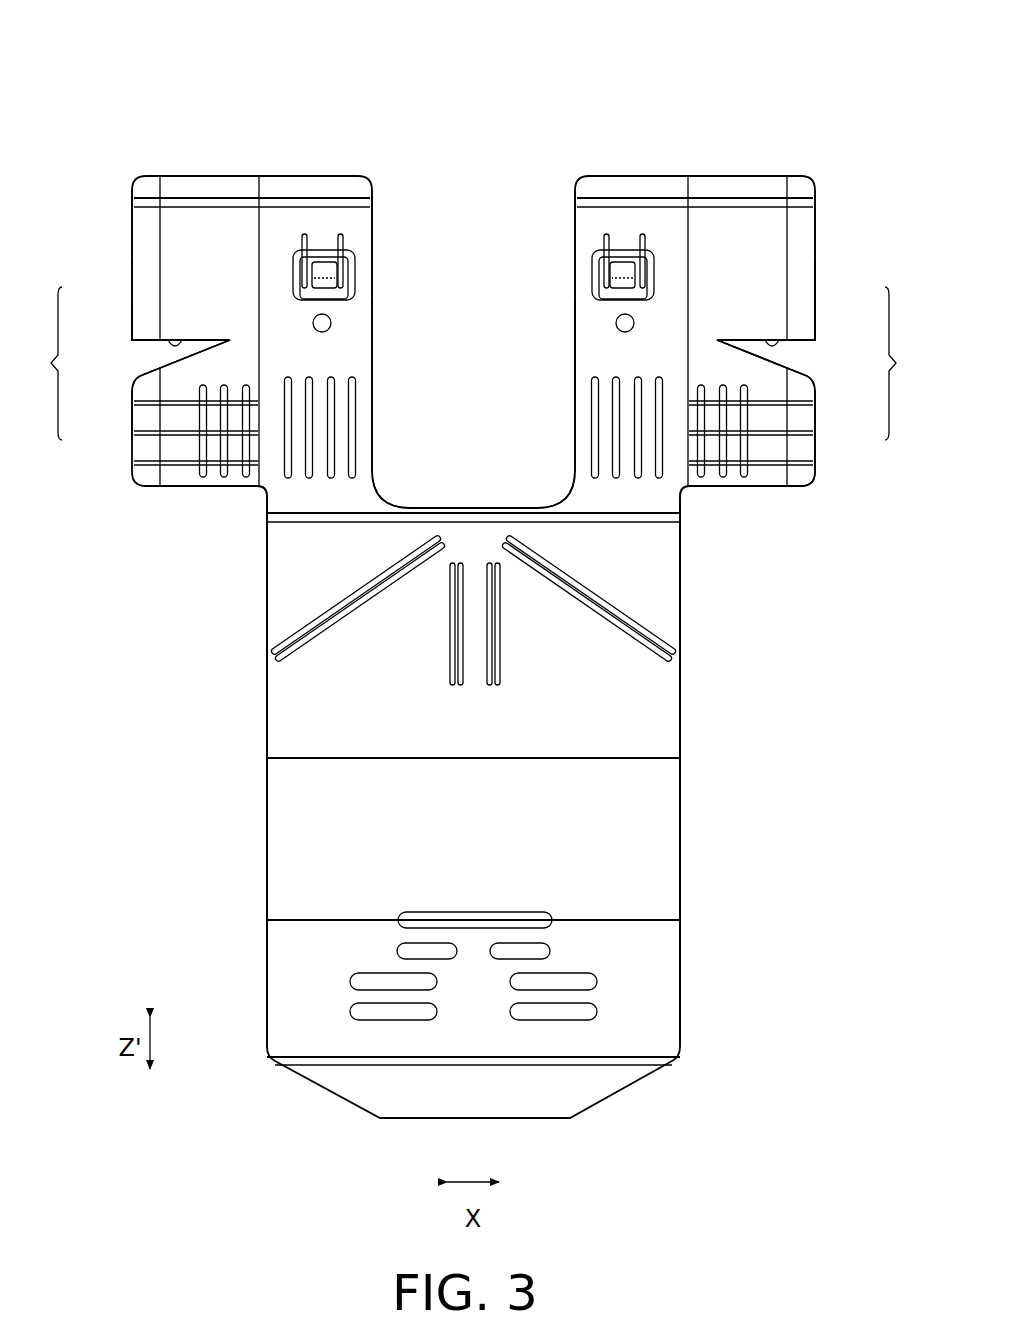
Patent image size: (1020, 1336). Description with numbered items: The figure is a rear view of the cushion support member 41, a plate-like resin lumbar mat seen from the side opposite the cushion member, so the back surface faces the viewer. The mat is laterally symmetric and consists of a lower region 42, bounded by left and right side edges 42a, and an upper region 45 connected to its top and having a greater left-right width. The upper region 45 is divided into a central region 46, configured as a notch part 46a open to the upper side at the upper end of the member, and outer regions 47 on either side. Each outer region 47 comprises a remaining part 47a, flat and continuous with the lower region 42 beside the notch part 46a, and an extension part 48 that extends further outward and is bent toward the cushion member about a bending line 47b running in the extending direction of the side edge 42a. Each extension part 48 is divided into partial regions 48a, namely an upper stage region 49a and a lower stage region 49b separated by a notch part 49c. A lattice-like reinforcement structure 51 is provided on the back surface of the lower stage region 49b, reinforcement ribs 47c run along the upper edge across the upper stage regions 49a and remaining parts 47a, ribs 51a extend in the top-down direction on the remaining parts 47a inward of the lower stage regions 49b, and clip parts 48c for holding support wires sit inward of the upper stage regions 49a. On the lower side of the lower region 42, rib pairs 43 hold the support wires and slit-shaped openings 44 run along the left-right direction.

The cushion support member 41 is at (747, 70).
The lower region 42 is at (685, 633).
The side edges 42a is at (267, 720).
The rib pairs 43 is at (332, 630).
The openings 44 is at (398, 920).
The upper region 45 is at (804, 494).
The central region 46 is at (575, 176).
The notch part 46a is at (376, 357).
The outer regions 47 is at (132, 176).
The remaining parts 47a is at (320, 190).
The bending lines 47b is at (262, 455).
The reinforcement ribs 47c is at (235, 210).
The extension parts 48 is at (51, 363).
The partial regions 48a is at (474, 371).
The clip parts 48c is at (354, 268).
The upper stage region 49a is at (172, 276).
The lower stage region 49b is at (172, 410).
The notch part 49c is at (182, 343).
The reinforcement structure 51 is at (183, 465).
The ribs 51a is at (264, 494).